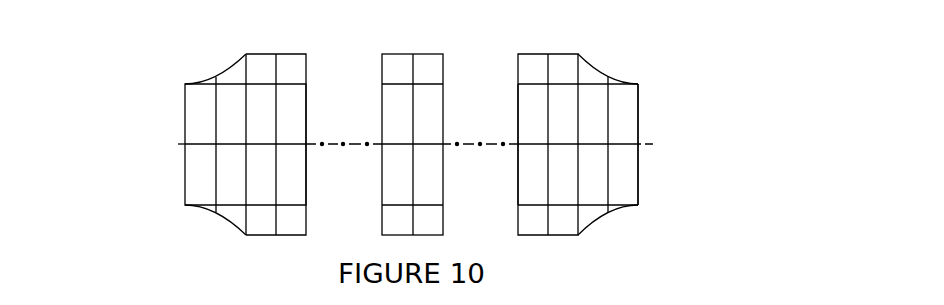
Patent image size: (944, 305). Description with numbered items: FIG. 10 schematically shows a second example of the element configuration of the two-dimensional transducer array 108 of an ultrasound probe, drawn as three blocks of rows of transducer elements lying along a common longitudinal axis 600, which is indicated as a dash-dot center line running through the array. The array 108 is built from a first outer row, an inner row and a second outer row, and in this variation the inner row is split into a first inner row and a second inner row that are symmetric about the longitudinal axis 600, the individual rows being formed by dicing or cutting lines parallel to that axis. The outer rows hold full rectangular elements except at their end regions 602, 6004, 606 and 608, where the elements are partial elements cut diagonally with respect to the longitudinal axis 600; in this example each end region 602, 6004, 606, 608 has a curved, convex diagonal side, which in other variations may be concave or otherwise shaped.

The two-dimensional transducer array 108 is at (104, 64).
The longitudinal axis 600 is at (178, 146).
The end region 602 is at (211, 45).
The lower tapered end portion of first coil section 6004 is at (208, 248).
The end region 606 is at (612, 43).
The end region 608 is at (613, 248).